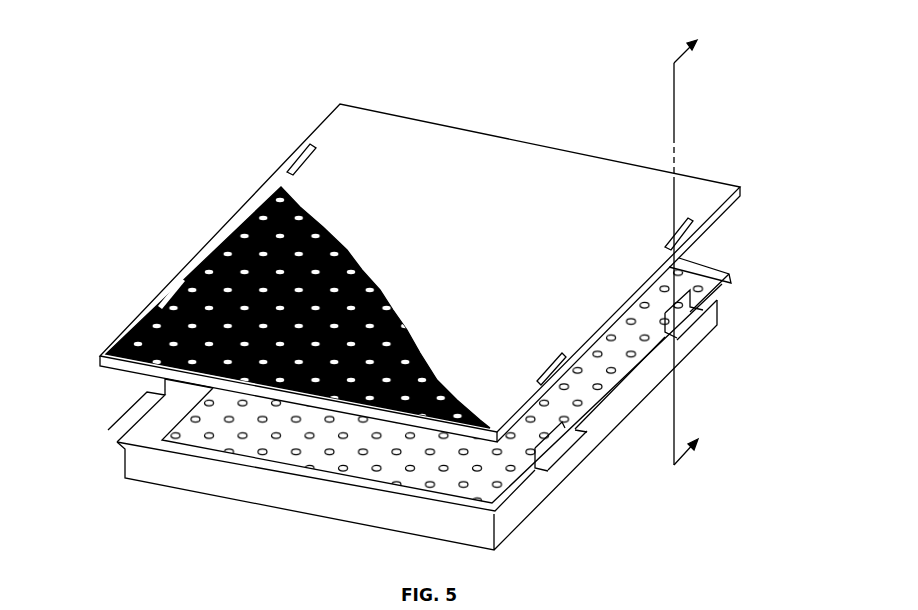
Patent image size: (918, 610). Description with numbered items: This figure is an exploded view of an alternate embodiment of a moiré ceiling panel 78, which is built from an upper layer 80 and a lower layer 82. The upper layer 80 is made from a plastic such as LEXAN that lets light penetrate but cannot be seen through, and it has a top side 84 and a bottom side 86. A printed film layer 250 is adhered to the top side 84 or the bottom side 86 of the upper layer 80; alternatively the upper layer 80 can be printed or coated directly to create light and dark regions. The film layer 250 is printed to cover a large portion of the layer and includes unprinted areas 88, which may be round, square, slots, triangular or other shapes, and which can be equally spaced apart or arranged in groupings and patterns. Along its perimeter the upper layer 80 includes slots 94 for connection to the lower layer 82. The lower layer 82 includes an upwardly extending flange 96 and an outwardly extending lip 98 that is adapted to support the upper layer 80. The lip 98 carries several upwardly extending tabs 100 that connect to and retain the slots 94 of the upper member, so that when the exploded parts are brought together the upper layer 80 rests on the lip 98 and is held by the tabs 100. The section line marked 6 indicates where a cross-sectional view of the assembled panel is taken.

The moiré ceiling panel 78 is at (166, 147).
The upper layer 80 is at (420, 128).
The lower layer 82 is at (533, 515).
The top side 84 is at (548, 160).
The bottom side 86 is at (733, 207).
The unprinted areas 88 is at (132, 327).
The slots 94 is at (307, 147).
The upwardly extending flange 96 is at (638, 393).
The outwardly extending lip 98 is at (652, 355).
The upwardly extending tabs 100 is at (552, 443).
The printed film layer 250 is at (206, 255).
The section line 6- 6 is at (689, 247).